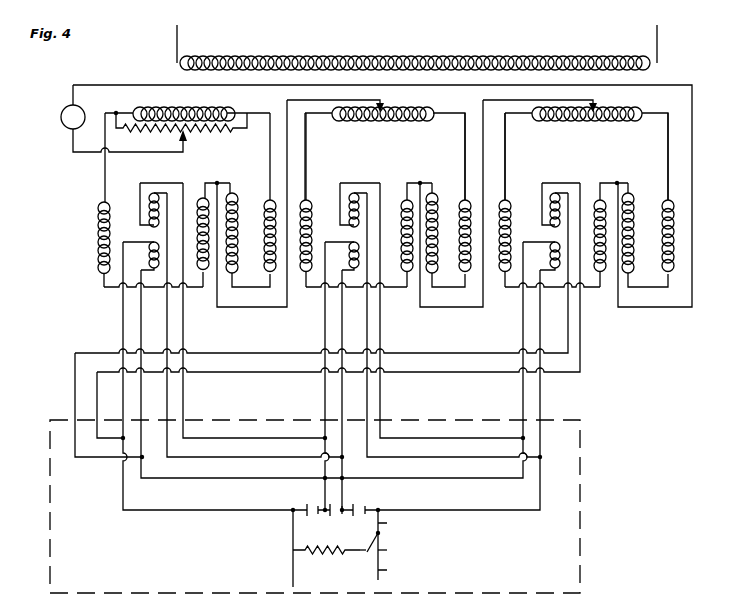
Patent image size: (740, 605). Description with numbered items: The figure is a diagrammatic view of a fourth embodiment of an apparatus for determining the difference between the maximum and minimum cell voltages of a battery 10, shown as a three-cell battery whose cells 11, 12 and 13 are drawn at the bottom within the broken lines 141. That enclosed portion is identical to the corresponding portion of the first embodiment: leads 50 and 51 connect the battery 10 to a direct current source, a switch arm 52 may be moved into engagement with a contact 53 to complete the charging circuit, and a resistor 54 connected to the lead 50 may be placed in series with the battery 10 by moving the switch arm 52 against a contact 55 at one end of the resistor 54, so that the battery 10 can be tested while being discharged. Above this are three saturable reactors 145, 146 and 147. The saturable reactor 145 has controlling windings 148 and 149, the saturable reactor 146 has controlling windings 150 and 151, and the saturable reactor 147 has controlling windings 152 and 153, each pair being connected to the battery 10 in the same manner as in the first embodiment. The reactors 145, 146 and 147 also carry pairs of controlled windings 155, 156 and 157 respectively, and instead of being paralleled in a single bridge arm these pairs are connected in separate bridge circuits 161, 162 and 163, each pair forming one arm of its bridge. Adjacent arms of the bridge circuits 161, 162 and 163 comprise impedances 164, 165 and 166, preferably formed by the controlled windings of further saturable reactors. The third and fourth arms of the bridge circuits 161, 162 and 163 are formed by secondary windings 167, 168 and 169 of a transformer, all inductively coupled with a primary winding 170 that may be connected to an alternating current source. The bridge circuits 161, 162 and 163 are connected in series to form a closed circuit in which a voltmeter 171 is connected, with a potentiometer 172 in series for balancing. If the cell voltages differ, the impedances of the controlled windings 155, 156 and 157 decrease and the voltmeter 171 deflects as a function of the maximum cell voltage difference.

The battery 10 is at (316, 523).
The cell 11 is at (315, 505).
The cell 12 is at (338, 505).
The cell 13 is at (366, 505).
The lead 50 is at (292, 552).
The lead 51 is at (388, 523).
The switch arm 52 is at (376, 534).
The contact 53 is at (388, 550).
The resistor 54 is at (318, 554).
The contact 55 is at (361, 553).
The broken lines 141 is at (583, 490).
The saturable reactor 145 is at (94, 251).
The saturable reactor 146 is at (304, 297).
The saturable reactor 147 is at (509, 298).
The controlling winding 148 is at (151, 192).
The controlling winding 149 is at (148, 258).
The controlling winding 150 is at (356, 192).
The controlling winding 151 is at (358, 272).
The controlling winding 152 is at (556, 192).
The controlling winding 153 is at (558, 272).
The controlled windings 155 is at (98, 222).
The controlled windings 156 is at (307, 198).
The controlled windings 157 is at (506, 198).
The bridge circuit 161 is at (96, 186).
The bridge circuit 162 is at (278, 108).
The bridge circuit 163 is at (476, 108).
The impedance 164 is at (243, 198).
The impedance 165 is at (446, 200).
The impedance 166 is at (655, 203).
The secondary winding 167 is at (135, 107).
The secondary winding 168 is at (358, 120).
The secondary winding 169 is at (590, 120).
The primary winding 170 is at (418, 55).
The voltmeter 171 is at (68, 130).
The potentiometer 172 is at (214, 133).